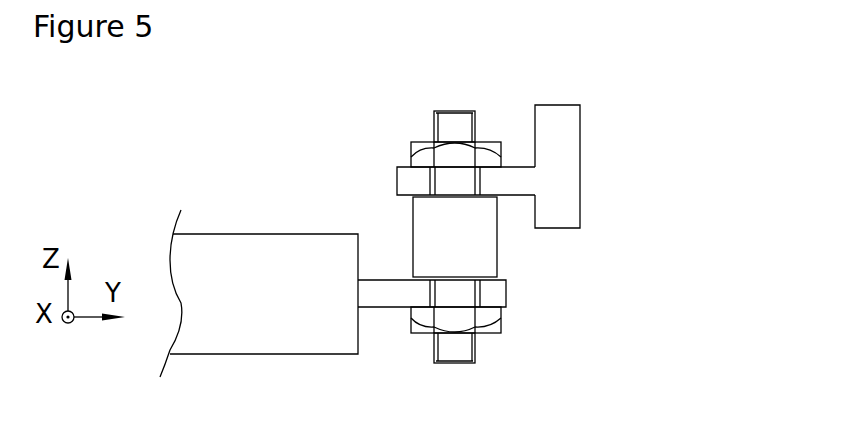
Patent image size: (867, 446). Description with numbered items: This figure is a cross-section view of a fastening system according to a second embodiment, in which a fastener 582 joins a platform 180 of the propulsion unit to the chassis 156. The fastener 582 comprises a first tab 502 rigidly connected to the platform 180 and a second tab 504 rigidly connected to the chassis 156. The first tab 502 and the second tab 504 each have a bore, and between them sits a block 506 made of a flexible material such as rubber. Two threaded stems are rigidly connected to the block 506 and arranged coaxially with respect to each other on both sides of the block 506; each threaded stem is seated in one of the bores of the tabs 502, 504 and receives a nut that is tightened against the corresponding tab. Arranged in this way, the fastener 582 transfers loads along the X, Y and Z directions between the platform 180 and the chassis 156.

The platform 180 is at (288, 310).
The first tab 502 is at (373, 298).
The second tab 504 is at (508, 185).
The block 506 is at (477, 243).
The chassis 156 is at (572, 188).
The fastener 582 is at (625, 288).